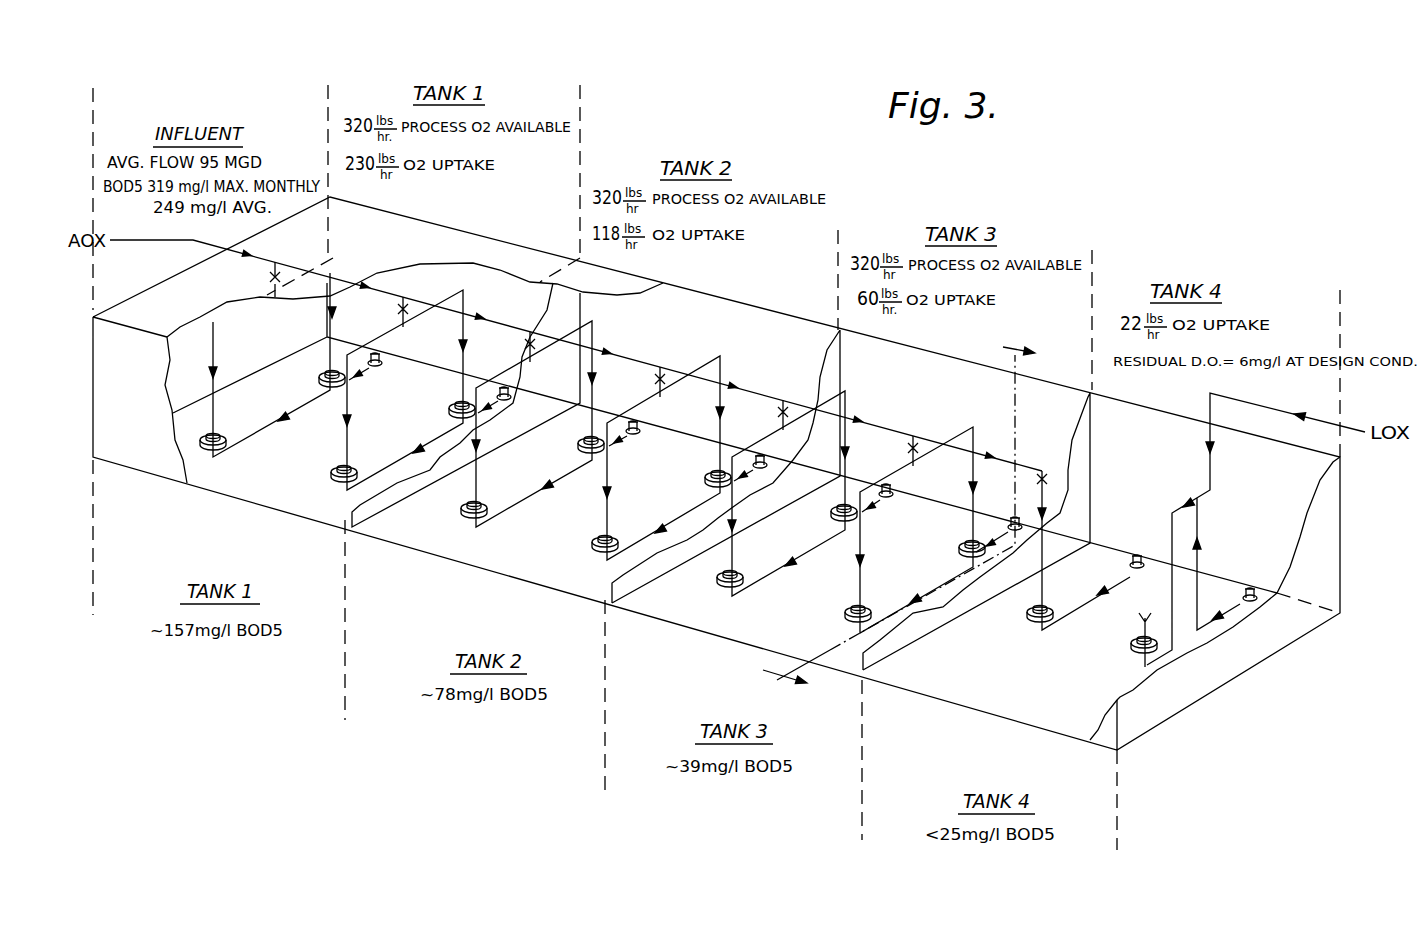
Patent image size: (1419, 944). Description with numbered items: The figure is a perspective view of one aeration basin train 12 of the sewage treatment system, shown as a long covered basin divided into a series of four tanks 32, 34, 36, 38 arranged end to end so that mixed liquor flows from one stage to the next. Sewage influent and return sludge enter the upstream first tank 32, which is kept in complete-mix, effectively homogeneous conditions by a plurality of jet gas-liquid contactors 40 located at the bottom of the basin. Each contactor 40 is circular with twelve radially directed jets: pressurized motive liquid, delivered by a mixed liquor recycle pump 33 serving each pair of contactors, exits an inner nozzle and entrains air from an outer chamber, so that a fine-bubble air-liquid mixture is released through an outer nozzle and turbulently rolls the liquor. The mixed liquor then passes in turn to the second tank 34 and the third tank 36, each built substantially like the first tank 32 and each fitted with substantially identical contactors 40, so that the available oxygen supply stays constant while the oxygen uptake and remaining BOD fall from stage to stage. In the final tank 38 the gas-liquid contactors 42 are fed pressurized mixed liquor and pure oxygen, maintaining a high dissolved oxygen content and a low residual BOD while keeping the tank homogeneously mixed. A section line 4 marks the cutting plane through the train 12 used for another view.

The aeration tank train 12 is at (714, 399).
The first aeration tank 32 is at (236, 482).
The second aeration tank 34 is at (511, 559).
The third aeration tank 36 is at (740, 622).
The final aeration tank 38 is at (977, 692).
The gas-liquid contactor 40 is at (678, 524).
The mixed liquor recycle pump 33 is at (1258, 592).
The gas-liquid contactor 42 is at (1132, 657).
The section line 4- 4 is at (899, 513).